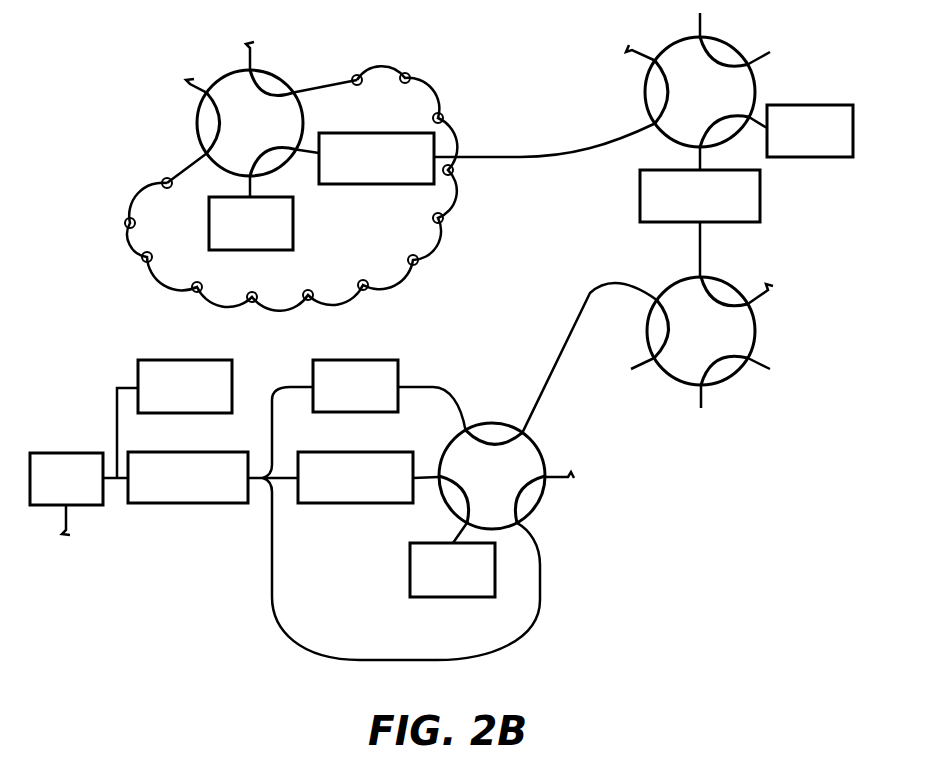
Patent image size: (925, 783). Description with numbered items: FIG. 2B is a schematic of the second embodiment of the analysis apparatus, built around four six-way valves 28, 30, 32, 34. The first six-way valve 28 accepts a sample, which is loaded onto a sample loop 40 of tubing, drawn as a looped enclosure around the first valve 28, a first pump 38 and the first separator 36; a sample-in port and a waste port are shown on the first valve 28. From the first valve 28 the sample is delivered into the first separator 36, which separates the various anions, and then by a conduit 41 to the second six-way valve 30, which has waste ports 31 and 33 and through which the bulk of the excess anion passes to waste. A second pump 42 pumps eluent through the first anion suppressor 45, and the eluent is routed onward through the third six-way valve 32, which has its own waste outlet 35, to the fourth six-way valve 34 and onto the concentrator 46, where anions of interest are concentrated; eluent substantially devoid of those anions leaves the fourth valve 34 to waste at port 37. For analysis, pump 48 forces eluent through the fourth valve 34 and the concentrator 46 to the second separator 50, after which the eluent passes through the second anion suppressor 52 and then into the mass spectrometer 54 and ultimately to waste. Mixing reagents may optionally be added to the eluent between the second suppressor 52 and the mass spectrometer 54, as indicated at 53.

The first six-way valve 28 is at (264, 134).
The second six-way valve 30 is at (714, 104).
The waste port 31 is at (657, 67).
The third six-way valve 32 is at (715, 343).
The waste port 33 is at (753, 72).
The fourth six-way valve 34 is at (506, 488).
The waste port of third valve 35 is at (748, 308).
The first separator 36 is at (378, 133).
The waste port 37 is at (542, 477).
The first pump 38 is at (272, 250).
The sample loop 40 is at (122, 238).
The conduit from first separator to second valve 41 is at (490, 158).
The second pump 42 is at (822, 157).
The anion suppressor 45 is at (760, 208).
The concentrator 46 is at (375, 360).
The pump 48 is at (470, 597).
The second separator 50 is at (363, 503).
The second anion suppressor 52 is at (210, 503).
The mixing reagent addition 53 is at (205, 360).
The mass spectrometer 54 is at (52, 452).